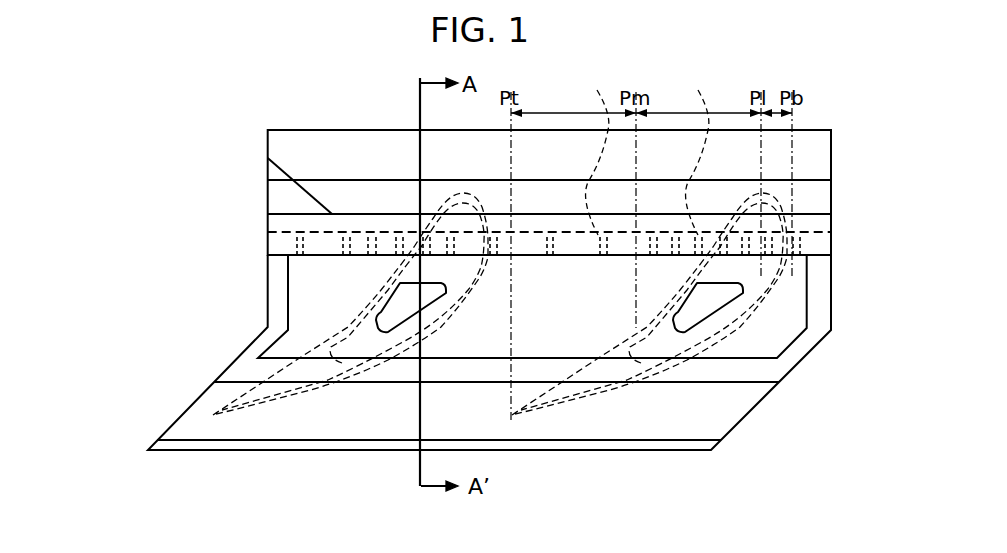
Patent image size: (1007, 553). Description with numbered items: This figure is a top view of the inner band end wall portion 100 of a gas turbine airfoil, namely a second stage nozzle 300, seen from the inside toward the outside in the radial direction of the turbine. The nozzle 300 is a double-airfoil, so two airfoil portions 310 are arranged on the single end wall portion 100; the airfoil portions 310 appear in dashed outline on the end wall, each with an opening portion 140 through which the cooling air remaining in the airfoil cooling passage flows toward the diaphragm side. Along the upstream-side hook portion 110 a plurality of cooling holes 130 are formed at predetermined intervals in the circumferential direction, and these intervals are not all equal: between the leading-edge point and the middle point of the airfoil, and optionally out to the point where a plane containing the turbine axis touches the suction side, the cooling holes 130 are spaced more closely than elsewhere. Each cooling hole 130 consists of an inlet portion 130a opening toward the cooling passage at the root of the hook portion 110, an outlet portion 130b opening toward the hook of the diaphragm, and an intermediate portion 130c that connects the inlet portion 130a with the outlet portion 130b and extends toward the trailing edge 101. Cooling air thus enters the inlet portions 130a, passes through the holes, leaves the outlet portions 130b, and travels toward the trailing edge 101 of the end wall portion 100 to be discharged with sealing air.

The inner band end wall portion 100 is at (817, 200).
The trailing edge 101 is at (358, 128).
The upstream-side hook portion 110 is at (268, 158).
The cooling hole 130 is at (108, 242).
The inlet portion 130a is at (297, 233).
The outlet portion 130b is at (300, 233).
The intermediate portion 130c is at (270, 232).
The opening portion 140 is at (703, 322).
The second stage nozzle 300 is at (235, 340).
The airfoil portion 310 is at (291, 393).